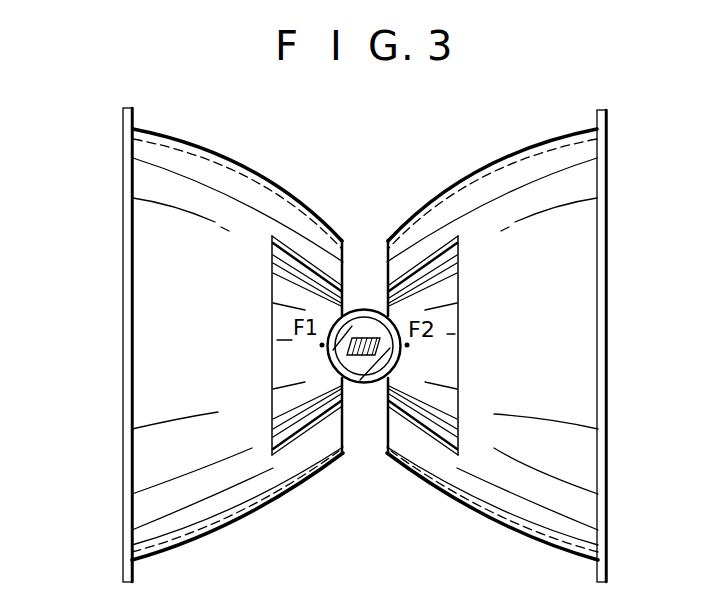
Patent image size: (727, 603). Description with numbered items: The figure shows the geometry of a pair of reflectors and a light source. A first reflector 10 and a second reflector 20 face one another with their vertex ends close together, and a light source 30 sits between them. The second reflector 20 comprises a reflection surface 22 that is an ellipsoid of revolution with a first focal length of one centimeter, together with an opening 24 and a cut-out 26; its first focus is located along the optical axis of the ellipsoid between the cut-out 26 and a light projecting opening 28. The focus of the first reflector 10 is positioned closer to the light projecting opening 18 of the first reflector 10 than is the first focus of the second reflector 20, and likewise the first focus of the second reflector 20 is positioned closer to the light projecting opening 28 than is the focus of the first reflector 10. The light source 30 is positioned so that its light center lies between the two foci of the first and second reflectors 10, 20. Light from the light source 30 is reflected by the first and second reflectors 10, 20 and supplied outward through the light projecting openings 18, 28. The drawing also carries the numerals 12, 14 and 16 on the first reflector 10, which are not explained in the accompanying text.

The first reflector 10 is at (189, 345).
The lower rim of first reflector 12 is at (203, 533).
The first panel 14 is at (284, 391).
The inner edge of first panel 16 is at (344, 263).
The light projecting opening 18 is at (112, 306).
The second reflector 20 is at (521, 346).
The reflection surface 22 is at (540, 535).
The opening 24 is at (447, 403).
The cut-out 26 is at (386, 263).
The light projecting opening 28 is at (609, 333).
The light source 30 is at (363, 384).